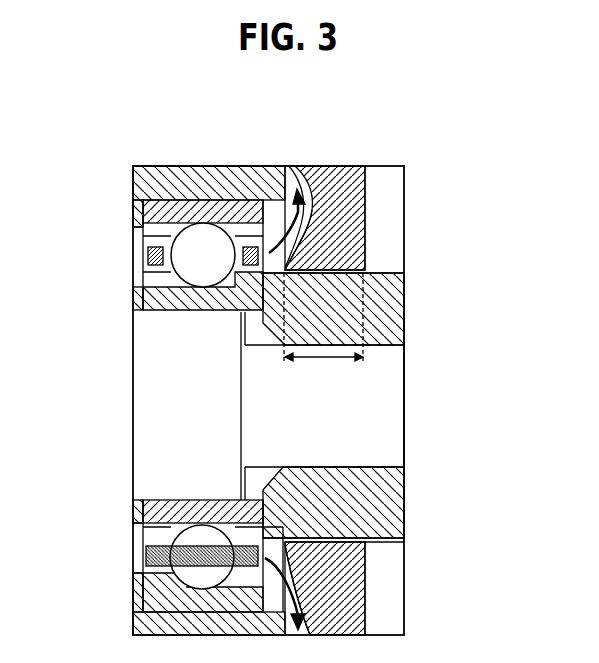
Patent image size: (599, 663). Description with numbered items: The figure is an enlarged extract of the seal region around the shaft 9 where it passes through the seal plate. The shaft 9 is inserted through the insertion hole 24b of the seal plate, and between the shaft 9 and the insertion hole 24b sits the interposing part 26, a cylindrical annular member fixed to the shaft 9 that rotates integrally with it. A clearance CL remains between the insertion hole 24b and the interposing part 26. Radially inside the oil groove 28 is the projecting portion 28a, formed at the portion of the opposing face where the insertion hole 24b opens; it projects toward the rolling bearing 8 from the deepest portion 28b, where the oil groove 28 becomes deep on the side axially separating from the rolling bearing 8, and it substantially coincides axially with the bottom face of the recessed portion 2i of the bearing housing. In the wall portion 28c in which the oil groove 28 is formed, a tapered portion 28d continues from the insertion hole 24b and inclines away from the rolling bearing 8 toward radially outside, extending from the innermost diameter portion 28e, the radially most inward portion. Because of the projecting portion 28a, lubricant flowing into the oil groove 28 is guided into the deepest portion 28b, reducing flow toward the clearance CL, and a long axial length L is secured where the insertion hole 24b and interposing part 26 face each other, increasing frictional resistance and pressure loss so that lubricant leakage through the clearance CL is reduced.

The recessed portion 2i is at (297, 167).
The oil groove 28 is at (375, 175).
The deepest portion 28b is at (345, 167).
The innermost diameter portion 28e is at (292, 260).
The projecting portion 28a is at (327, 532).
The tapered portion 28d is at (400, 553).
The wall portion 28c is at (295, 578).
The interposing part 26 is at (404, 323).
The rolling bearing 8 is at (143, 273).
The insertion hole 24b is at (165, 531).
The shaft 9 is at (329, 418).
The axial length L is at (323, 328).
The clearance CL is at (404, 272).